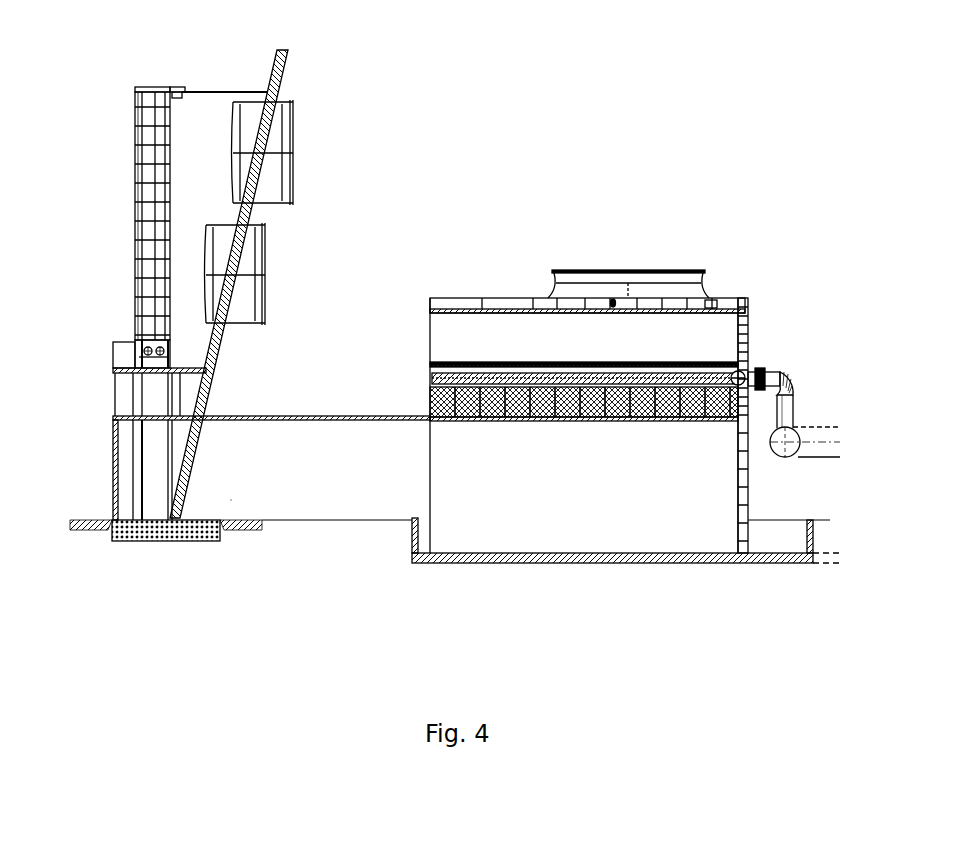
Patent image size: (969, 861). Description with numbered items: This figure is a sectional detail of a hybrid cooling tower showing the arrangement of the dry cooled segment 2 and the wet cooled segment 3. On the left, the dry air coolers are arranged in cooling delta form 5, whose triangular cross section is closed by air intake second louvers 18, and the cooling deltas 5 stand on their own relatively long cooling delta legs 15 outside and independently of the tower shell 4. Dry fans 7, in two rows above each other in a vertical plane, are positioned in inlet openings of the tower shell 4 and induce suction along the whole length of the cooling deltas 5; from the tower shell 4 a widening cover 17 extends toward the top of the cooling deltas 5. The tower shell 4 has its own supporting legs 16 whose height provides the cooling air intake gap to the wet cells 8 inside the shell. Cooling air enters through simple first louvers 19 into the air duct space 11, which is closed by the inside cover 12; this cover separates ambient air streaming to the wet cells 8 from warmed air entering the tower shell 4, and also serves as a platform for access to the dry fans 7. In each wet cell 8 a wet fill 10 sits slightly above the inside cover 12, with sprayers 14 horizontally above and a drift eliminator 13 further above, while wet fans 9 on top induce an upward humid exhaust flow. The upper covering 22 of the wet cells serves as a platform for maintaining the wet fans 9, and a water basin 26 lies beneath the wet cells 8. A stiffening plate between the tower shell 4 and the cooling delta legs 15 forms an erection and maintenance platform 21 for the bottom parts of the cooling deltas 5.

The dry cooled segment 2 is at (130, 78).
The wet cooled segment 3 is at (470, 585).
The tower shell 4 is at (290, 68).
The cooling delta 5 is at (135, 166).
The dry fan 7 is at (236, 152).
The wet cell 8 is at (688, 447).
The wet fan 9 is at (645, 280).
The wet fill 10 is at (503, 420).
The air duct space 11 is at (335, 492).
The inside cover 12 is at (265, 416).
The drift eliminator 13 is at (478, 363).
The sprayers 14 is at (593, 378).
The cooling delta legs 15 is at (135, 462).
The supporting legs 16 is at (180, 500).
The widening cover 17 is at (215, 92).
The second louvers 18 is at (138, 264).
The first louvers 19 is at (128, 470).
The erection and maintenance platform 21 is at (180, 366).
The upper covering 22 is at (455, 303).
The water basin 26 is at (607, 543).